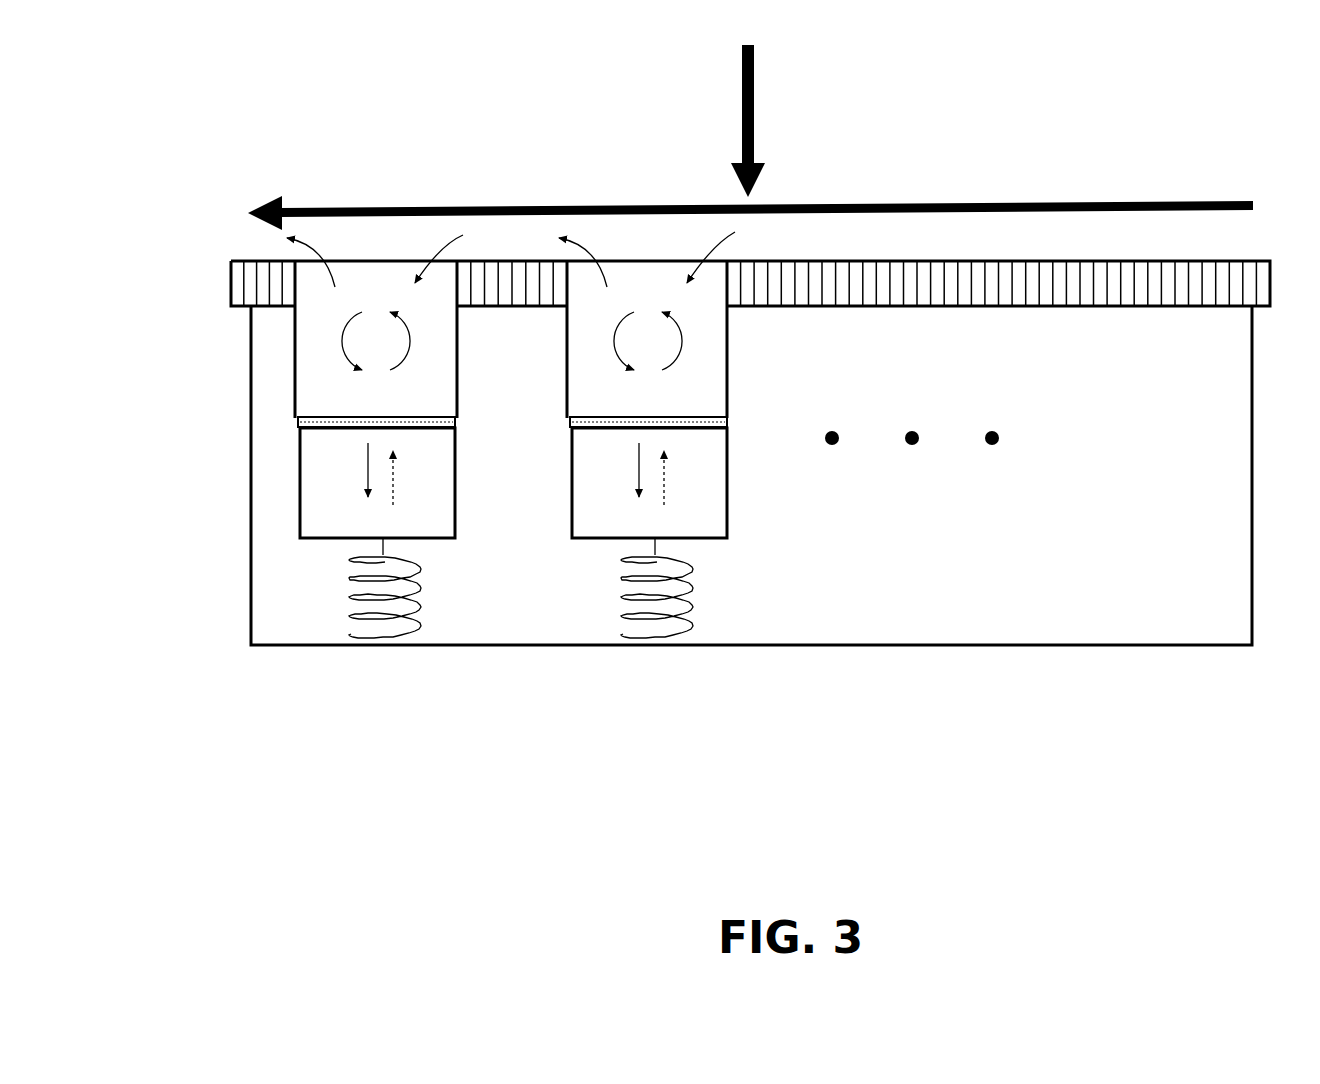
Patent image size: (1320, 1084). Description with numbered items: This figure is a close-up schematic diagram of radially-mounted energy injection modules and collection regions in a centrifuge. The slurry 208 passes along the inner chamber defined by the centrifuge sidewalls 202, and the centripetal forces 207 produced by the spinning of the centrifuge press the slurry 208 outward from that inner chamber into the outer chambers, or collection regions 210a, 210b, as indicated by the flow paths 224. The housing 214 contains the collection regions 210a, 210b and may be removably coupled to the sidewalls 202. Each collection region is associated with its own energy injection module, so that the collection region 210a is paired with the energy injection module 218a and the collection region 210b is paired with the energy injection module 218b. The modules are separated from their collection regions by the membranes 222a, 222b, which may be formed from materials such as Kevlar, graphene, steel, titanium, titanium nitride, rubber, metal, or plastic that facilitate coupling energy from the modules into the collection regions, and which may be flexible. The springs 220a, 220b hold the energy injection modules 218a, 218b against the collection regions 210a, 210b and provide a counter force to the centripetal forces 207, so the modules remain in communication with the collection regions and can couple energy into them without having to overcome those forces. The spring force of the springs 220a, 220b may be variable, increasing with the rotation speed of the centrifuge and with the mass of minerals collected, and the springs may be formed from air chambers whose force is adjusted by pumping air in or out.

The centrifuge sidewalls 202 is at (1110, 252).
The centripetal forces 207 is at (735, 82).
The slurry 208 is at (601, 196).
The collection region 210a is at (292, 333).
The collection region 210b is at (564, 333).
The housing 214 is at (250, 590).
The energy injection module 218a is at (297, 438).
The energy injection module 218b is at (570, 441).
The spring 220a is at (432, 592).
The spring 220b is at (700, 592).
The membrane 222a is at (347, 410).
The membrane 222b is at (618, 410).
The flow paths 224 is at (322, 252).